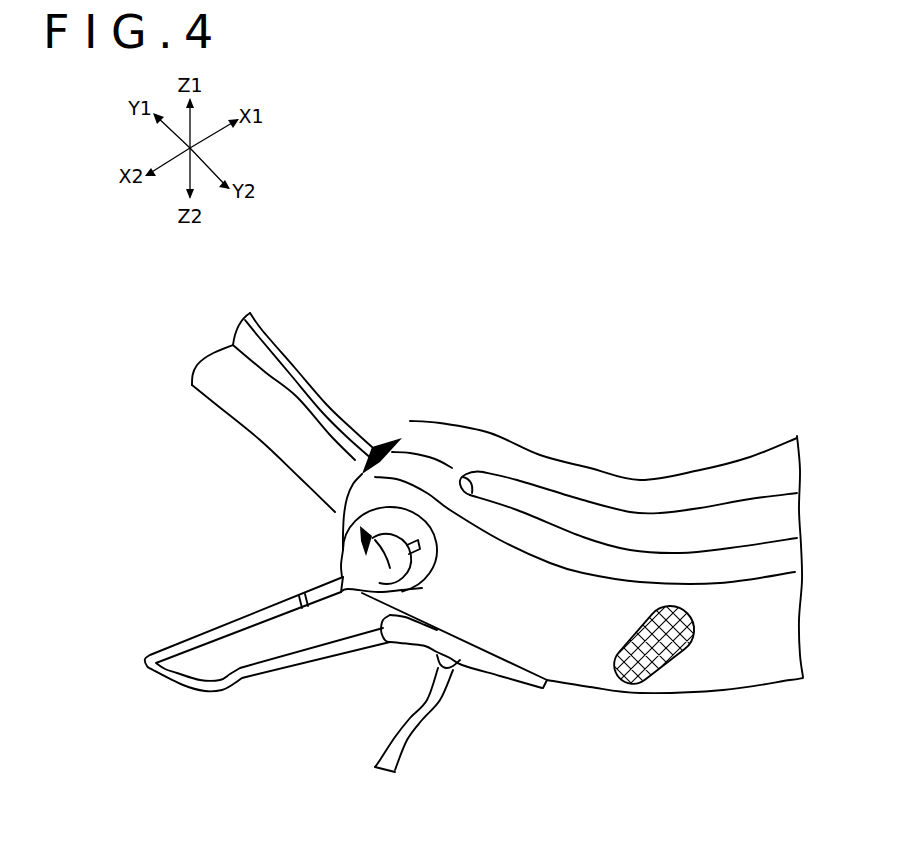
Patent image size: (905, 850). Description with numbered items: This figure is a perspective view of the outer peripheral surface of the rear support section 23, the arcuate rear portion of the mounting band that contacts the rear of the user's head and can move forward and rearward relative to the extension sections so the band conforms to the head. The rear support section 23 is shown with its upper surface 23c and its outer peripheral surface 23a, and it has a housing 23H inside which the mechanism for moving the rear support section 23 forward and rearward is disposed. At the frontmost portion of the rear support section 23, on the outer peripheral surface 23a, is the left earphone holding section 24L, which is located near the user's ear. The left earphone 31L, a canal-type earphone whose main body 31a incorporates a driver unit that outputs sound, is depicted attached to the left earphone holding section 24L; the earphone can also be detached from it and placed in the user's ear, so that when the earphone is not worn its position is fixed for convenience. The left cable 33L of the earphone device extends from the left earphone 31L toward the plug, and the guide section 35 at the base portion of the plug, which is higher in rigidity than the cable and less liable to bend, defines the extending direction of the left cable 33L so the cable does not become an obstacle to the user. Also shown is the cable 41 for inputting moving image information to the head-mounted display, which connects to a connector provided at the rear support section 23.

The rear support section 23 is at (612, 464).
The upper surface 23c is at (672, 530).
The outer peripheral surface 23a is at (592, 665).
The housing 23H is at (643, 692).
The left earphone holding section 24L is at (385, 514).
The left earphone 31L is at (349, 548).
The main body 31a is at (381, 592).
The left cable 33L is at (277, 665).
The guide section 35 is at (427, 632).
The cable 41 is at (420, 723).